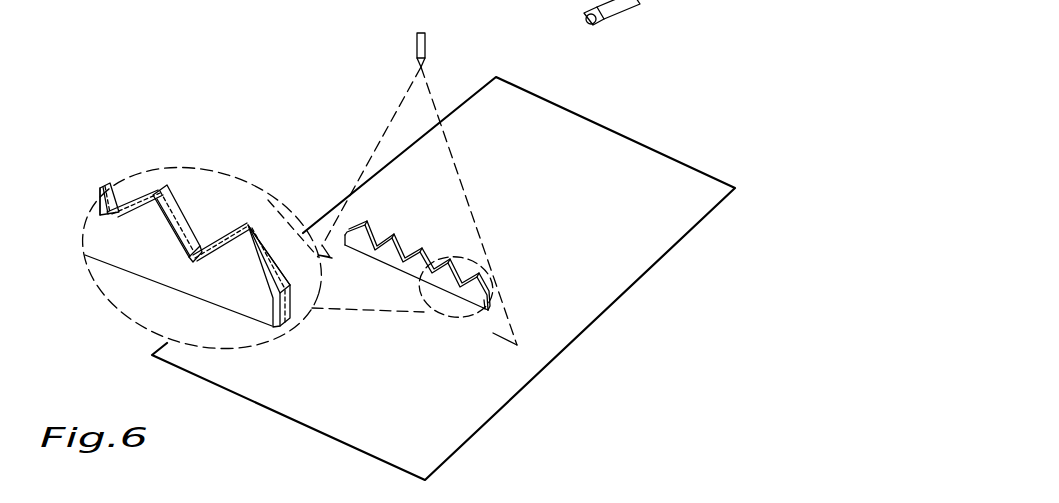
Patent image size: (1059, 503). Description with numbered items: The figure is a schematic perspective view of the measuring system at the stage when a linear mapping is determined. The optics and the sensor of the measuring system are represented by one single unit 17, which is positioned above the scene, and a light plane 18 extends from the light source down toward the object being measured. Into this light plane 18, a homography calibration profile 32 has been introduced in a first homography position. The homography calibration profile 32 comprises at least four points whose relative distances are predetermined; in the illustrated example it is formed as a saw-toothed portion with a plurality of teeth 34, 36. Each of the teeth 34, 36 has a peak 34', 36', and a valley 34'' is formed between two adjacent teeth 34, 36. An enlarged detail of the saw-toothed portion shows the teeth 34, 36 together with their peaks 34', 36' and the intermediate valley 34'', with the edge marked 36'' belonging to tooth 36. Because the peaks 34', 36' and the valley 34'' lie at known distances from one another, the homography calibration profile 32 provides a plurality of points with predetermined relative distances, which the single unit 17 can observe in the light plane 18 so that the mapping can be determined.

The single unit 17 is at (628, 0).
The light plane 18 is at (362, 138).
The homography calibration profile 32 is at (178, 220).
The tooth 34 is at (255, 303).
The peak 34' is at (273, 214).
The valley 34'' is at (199, 277).
The tooth 36 is at (98, 227).
The peak 36' is at (138, 163).
The tooth edge 36'' is at (65, 211).